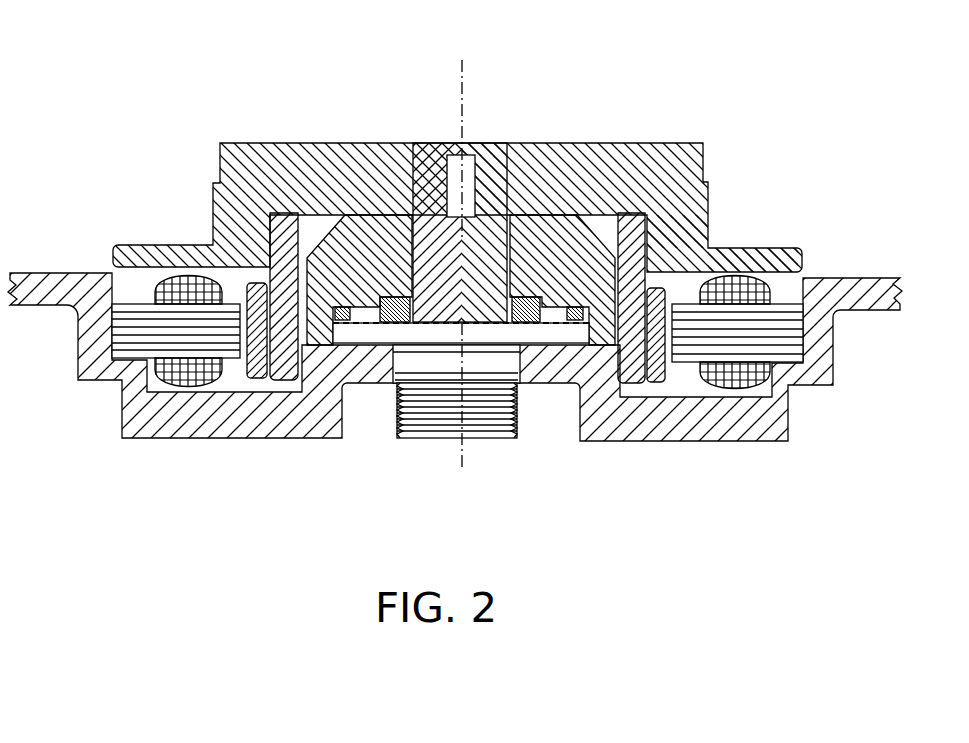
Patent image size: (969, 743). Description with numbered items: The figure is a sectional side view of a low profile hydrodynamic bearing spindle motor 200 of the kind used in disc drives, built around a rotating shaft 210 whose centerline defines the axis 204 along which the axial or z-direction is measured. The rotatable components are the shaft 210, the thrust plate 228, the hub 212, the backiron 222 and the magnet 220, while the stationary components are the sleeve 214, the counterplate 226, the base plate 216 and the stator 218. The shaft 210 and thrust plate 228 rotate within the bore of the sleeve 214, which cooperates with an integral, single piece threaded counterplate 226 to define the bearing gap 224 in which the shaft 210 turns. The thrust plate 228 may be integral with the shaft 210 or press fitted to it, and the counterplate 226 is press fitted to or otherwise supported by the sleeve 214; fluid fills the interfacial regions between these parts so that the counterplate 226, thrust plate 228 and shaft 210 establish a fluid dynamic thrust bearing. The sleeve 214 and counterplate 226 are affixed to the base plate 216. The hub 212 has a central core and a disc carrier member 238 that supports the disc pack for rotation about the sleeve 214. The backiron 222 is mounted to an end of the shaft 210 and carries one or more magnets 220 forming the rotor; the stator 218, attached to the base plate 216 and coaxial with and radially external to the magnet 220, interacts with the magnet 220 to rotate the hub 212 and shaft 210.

The spindle motor 200 is at (318, 95).
The axis 204 is at (463, 93).
The shaft 210 is at (478, 265).
The hub 212 is at (533, 160).
The sleeve 214 is at (573, 252).
The base plate 216 is at (133, 413).
The stator 218 is at (133, 303).
The magnet 220 is at (255, 372).
The backiron 222 is at (685, 245).
The bearing gap 224 is at (510, 250).
The counterplate 226 is at (550, 333).
The thrust plate 228 is at (527, 325).
The disc carrier member 238 is at (707, 237).